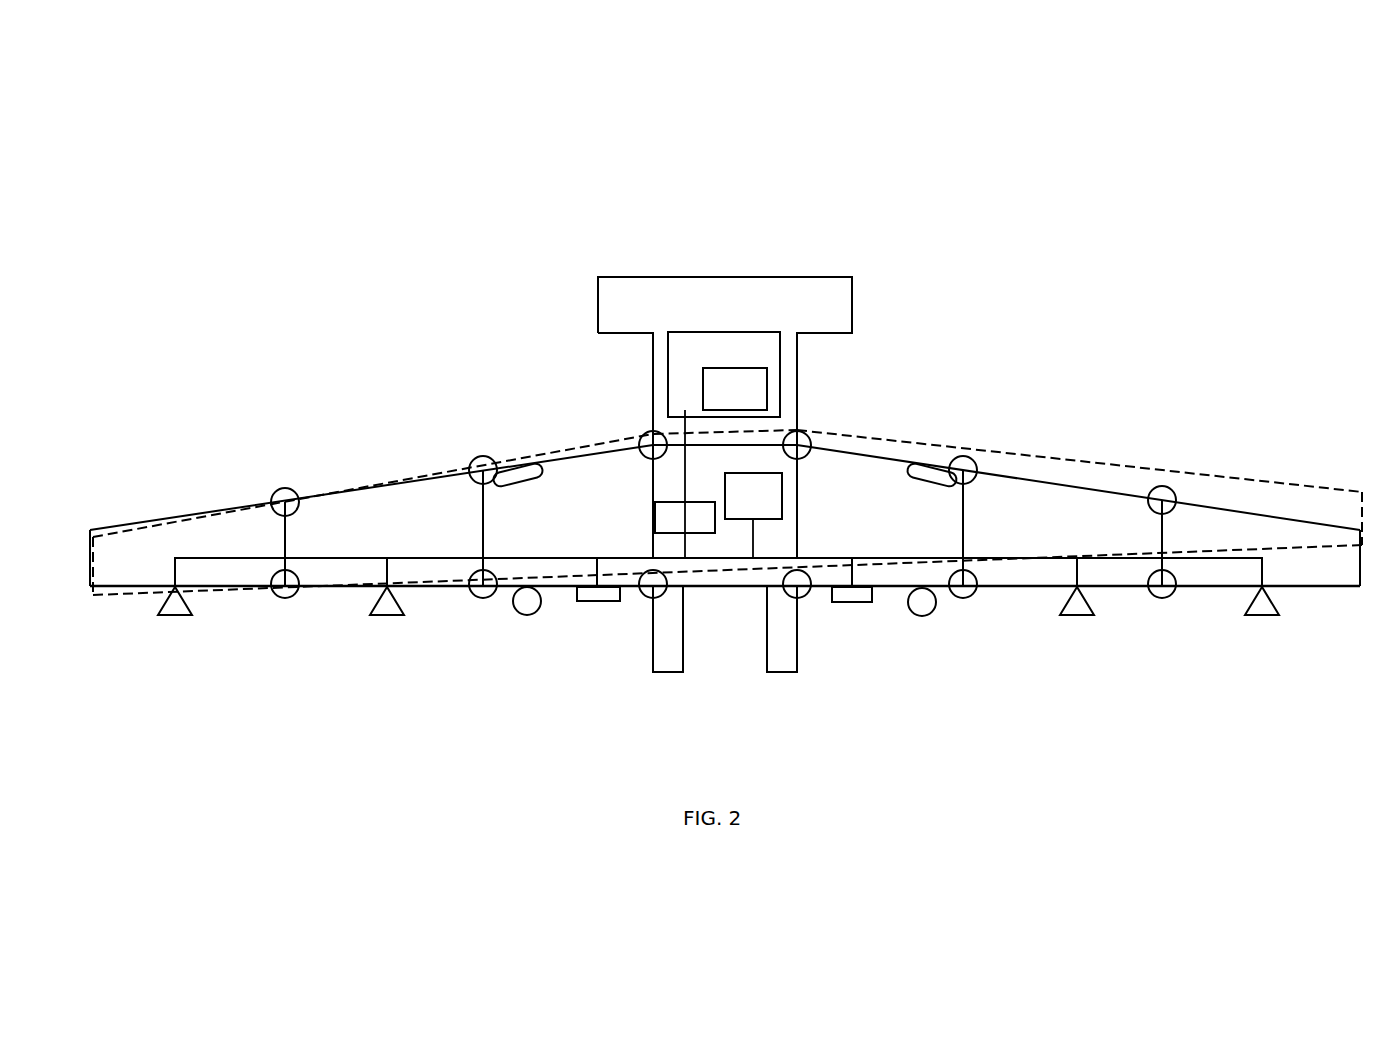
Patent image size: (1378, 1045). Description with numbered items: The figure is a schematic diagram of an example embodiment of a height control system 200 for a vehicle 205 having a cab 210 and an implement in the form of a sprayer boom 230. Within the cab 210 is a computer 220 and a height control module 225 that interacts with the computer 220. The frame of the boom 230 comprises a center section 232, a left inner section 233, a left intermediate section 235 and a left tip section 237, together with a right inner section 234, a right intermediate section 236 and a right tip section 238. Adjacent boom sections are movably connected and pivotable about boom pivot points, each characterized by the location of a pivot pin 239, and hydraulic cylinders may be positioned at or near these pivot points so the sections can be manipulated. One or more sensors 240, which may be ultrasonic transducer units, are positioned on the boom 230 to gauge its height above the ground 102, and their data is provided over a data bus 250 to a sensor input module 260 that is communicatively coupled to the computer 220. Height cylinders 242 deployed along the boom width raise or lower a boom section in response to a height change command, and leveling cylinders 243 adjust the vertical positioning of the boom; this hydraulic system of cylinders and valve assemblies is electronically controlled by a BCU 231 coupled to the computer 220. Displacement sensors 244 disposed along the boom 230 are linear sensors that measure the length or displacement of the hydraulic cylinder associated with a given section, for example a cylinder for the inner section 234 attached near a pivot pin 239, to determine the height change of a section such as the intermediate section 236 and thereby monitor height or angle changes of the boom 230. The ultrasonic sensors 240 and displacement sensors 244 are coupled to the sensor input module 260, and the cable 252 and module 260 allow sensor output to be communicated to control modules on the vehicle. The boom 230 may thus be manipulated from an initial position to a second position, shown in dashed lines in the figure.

The ground 102 is at (739, 729).
The height control system 200 is at (770, 130).
The vehicle 205 is at (879, 246).
The cab 210 is at (566, 332).
The computer 220 is at (724, 374).
The height control module 225 is at (726, 463).
The sprayer boom 230 is at (456, 416).
The BCU 231 is at (753, 515).
The center section 232 is at (737, 587).
The left inner section 233 is at (585, 447).
The right inner section 234 is at (863, 449).
The left intermediate section 235 is at (396, 479).
The right intermediate section 236 is at (1083, 486).
The left tip section 237 is at (162, 514).
The right tip section 238 is at (1268, 511).
The pivot pin 239 is at (280, 490).
The sensor 240 is at (192, 613).
The height cylinder 242 is at (527, 615).
The leveling cylinder 243 is at (503, 467).
The displacement sensor 244 is at (595, 602).
The data bus 250 is at (568, 552).
The cable 252 is at (462, 558).
The sensor input module 260 is at (685, 517).